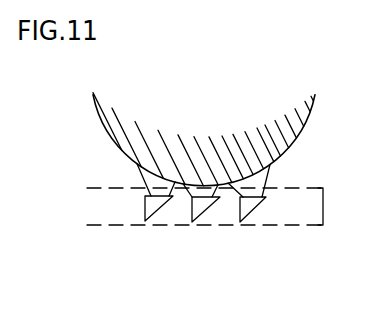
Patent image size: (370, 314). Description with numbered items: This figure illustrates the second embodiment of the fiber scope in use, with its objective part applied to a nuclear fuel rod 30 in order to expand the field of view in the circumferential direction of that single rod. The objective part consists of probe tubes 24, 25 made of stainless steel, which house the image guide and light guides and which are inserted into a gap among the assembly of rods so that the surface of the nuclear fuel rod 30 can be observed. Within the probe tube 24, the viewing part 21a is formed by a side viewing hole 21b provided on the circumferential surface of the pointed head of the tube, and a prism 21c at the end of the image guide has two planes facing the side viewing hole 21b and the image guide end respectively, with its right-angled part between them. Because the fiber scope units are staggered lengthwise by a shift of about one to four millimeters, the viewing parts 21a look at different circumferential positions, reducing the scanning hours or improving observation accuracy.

The nuclear fuel rod 30 is at (210, 130).
The probe tube 24 is at (179, 174).
The probe tube 25 is at (86, 188).
The viewing part 21a is at (251, 221).
The side viewing hole 21b is at (204, 222).
The prism 21c is at (155, 222).